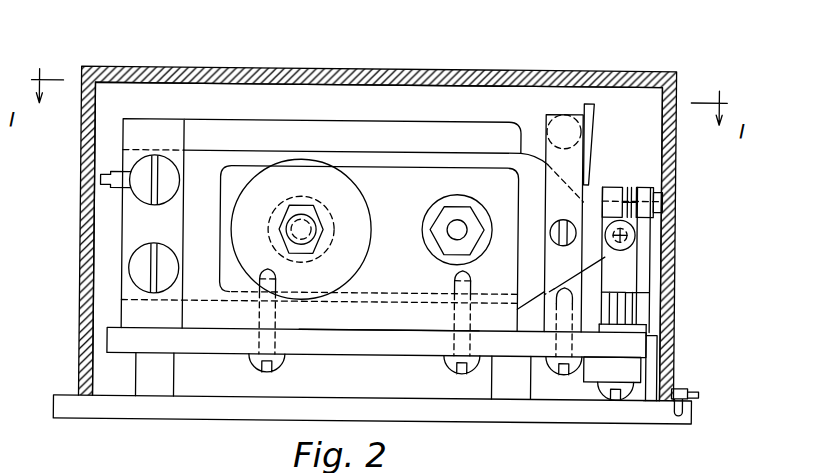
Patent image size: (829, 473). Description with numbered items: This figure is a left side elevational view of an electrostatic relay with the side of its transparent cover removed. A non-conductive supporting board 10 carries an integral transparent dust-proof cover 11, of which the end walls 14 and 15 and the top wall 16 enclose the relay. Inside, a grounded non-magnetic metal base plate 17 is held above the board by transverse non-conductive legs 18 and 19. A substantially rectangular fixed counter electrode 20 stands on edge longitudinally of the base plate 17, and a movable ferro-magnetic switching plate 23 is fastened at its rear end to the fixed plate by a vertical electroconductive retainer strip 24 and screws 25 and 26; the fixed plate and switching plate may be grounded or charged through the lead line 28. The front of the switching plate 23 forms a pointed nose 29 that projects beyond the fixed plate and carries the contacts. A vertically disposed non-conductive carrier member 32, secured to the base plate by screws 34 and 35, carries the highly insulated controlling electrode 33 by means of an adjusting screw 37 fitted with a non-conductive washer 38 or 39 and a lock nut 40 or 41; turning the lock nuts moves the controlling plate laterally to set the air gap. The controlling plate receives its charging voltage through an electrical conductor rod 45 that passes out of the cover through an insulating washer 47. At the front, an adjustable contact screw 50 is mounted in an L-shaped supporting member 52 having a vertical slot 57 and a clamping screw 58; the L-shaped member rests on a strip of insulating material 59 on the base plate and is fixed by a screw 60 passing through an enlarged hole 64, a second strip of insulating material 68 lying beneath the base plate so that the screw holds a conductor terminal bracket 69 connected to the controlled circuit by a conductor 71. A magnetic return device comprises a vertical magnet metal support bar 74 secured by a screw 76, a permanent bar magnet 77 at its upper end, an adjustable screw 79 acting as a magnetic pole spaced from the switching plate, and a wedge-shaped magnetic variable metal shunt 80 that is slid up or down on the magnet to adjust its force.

The supporting member or board 10 is at (198, 422).
The transparent dust-proof cover 11 is at (76, 200).
The end wall 14 is at (80, 147).
The end wall 15 is at (675, 152).
The top wall 16 is at (330, 72).
The base plate 17 is at (353, 349).
The leg 18 is at (175, 386).
The leg 19 is at (493, 384).
The fixedly mounted counter electrode 20 is at (262, 116).
The switching plate 23 is at (207, 158).
The retainer strip 24 is at (183, 217).
The screw 25 is at (179, 181).
The screw 26 is at (179, 268).
The electrical conductor or lead line 28 is at (104, 172).
The pointed nose 29 is at (587, 208).
The carrier member 32 is at (390, 330).
The controlling or actuating electrode 33 is at (364, 306).
The screw 34 is at (276, 366).
The screw 35 is at (447, 368).
The adjusting screw 37 is at (450, 234).
The non-conductive washer 38 is at (336, 226).
The non-conductive washer 39 is at (456, 202).
The lock nut 40 is at (327, 217).
The lock nut 41 is at (469, 222).
The electrical conductor rod 45 is at (285, 231).
The insulating washer 47 is at (366, 220).
The contact screw 50 is at (636, 238).
The L-shaped supporting member 52 is at (640, 274).
The vertical slot 57 is at (622, 188).
The clamping screw 58 is at (662, 199).
The strip of insulating material 59 is at (662, 326).
The screw 60 is at (612, 397).
The enlarged hole 64 is at (650, 341).
The second strip of insulating material 68 is at (660, 357).
The conductor terminal bracket 69 is at (647, 404).
The conductor 71 is at (698, 393).
The magnet metal support bar 74 is at (547, 158).
The screw 76 is at (559, 372).
The permanent bar magnet 77 is at (545, 121).
The adjustable screw 79 is at (569, 220).
The magnetic variable metal shunt 80 is at (592, 114).